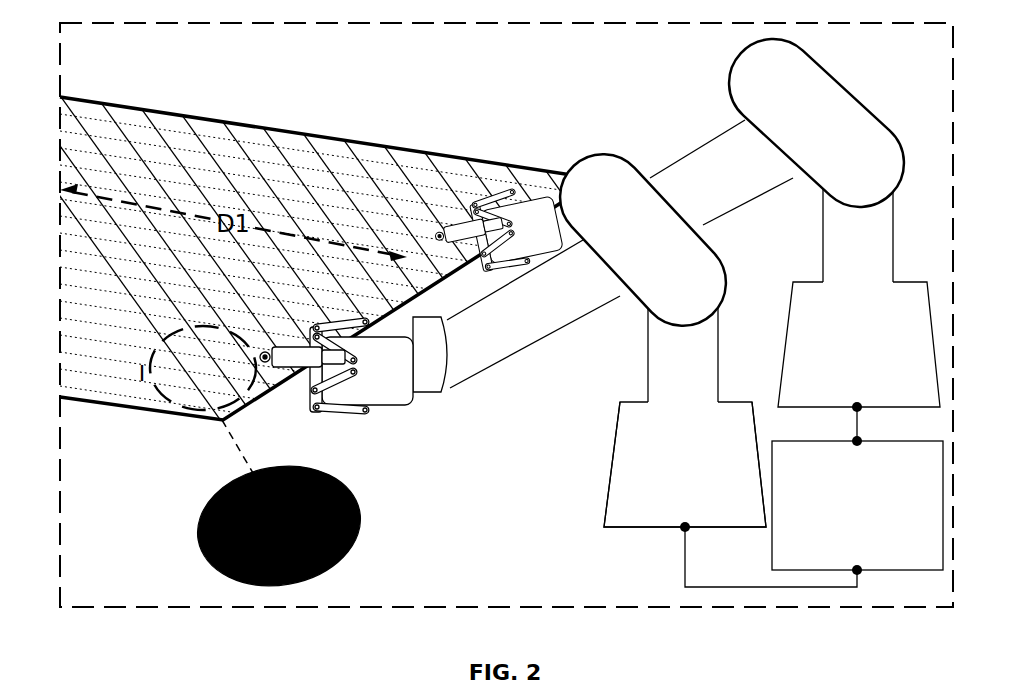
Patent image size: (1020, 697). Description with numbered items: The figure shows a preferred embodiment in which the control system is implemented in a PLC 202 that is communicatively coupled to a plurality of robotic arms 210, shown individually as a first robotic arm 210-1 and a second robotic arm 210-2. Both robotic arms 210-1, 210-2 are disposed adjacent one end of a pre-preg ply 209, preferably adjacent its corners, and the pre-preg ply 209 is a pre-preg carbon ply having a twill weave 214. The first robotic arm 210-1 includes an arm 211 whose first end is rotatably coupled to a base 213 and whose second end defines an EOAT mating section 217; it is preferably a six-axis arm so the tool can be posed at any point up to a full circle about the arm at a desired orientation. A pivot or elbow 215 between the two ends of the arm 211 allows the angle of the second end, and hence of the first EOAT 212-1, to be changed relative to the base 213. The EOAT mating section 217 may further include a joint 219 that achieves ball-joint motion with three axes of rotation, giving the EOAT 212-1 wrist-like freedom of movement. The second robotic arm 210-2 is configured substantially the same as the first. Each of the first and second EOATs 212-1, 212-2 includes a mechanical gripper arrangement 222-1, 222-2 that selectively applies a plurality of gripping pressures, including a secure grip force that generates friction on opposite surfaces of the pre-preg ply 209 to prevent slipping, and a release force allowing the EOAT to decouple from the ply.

The PLC 202 is at (857, 505).
The pre-preg ply 209 is at (412, 140).
The plurality of robotic arms 210 is at (663, 123).
The first robotic arm 210-1 is at (685, 464).
The second robotic arm 210-2 is at (825, 214).
The arm 211 is at (635, 370).
The first EOAT 212-1 is at (388, 395).
The second EOAT 212-2 is at (516, 198).
The base 213 is at (613, 433).
The twill weave 214 is at (210, 490).
The pivot/elbow 215 is at (683, 275).
The EOAT mating section 217 is at (458, 395).
The joint 219 is at (409, 338).
The first mechanical gripper arrangement 222-1 is at (312, 415).
The second mechanical gripper arrangement 222-2 is at (430, 230).